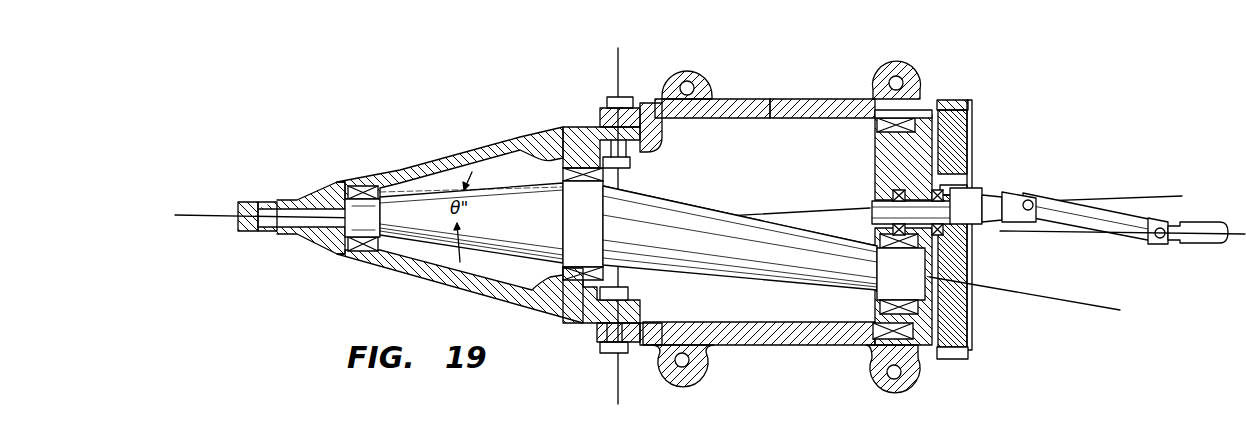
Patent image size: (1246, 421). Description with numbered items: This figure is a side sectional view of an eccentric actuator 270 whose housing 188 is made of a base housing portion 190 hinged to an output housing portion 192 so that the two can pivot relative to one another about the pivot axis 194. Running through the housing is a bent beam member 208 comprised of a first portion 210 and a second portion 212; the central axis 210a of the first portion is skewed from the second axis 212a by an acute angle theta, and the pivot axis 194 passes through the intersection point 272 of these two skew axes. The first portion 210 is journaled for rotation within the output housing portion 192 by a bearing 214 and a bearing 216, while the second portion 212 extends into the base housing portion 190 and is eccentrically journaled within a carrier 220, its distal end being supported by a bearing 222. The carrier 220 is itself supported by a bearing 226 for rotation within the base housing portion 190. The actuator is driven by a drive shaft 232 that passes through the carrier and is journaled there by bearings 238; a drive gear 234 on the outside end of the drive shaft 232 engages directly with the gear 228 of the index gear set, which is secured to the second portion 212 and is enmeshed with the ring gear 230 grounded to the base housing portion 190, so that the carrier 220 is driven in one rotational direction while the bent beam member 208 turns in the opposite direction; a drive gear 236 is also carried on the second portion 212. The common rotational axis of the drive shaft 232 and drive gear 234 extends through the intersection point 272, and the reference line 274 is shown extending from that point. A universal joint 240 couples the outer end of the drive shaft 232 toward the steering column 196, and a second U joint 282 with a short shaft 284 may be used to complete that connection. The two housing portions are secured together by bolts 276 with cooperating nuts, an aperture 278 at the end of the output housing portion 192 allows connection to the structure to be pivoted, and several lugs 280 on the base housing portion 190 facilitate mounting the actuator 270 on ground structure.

The housing 188 is at (740, 106).
The base housing portion 190 is at (789, 100).
The output housing portion 192 is at (414, 168).
The pivot axis 194 is at (618, 70).
The steering column 196 is at (1208, 224).
The bent beam member 208 is at (708, 202).
The first portion 210 is at (541, 243).
The central axis 210a is at (210, 214).
The second portion 212 is at (740, 241).
The second axis 212a is at (1062, 298).
The bearing 214 is at (364, 186).
The bearing 216 is at (566, 136).
The carrier 220 is at (874, 154).
The bearing 222 is at (876, 294).
The bearing 226 is at (878, 112).
The gear 228 is at (966, 268).
The ring gear 230 is at (970, 130).
The drive shaft 232 is at (872, 208).
The drive gear 234 is at (1002, 198).
The drive gear 236 is at (892, 194).
The bearings 238 is at (960, 190).
The universal joint 240 is at (1018, 216).
The eccentric actuator 270 is at (965, 77).
The intersection point 272 is at (622, 216).
The reference line 274 is at (1121, 202).
The bolts 276 is at (622, 96).
The aperture 278 is at (260, 234).
The lugs 280 is at (696, 76).
The second U joint 282 is at (1162, 248).
The short shaft 284 is at (1097, 238).